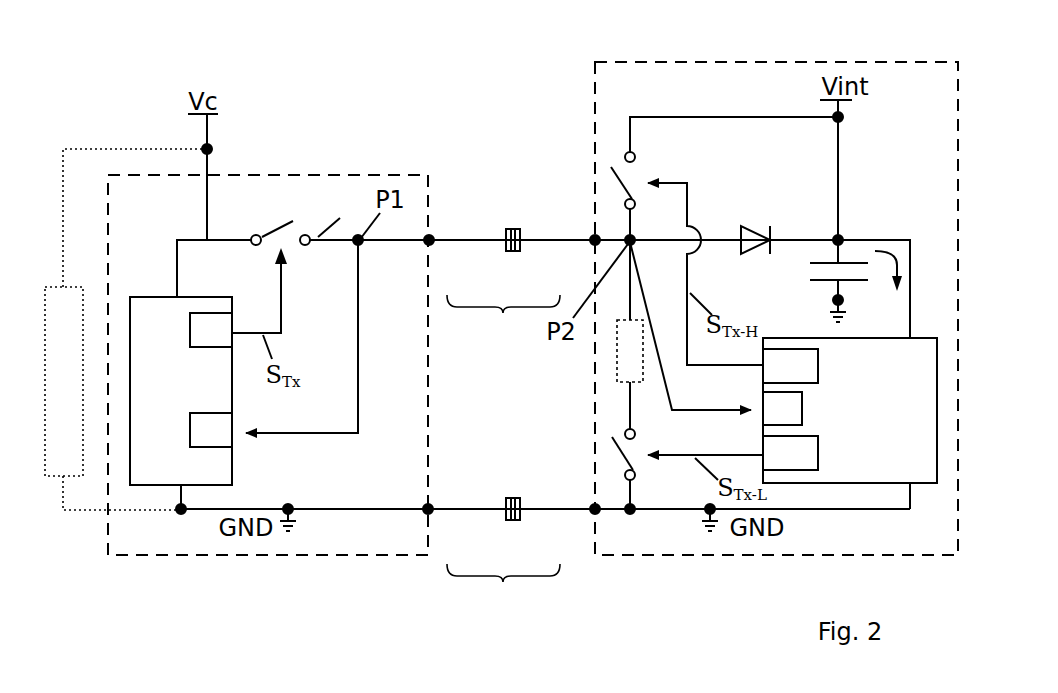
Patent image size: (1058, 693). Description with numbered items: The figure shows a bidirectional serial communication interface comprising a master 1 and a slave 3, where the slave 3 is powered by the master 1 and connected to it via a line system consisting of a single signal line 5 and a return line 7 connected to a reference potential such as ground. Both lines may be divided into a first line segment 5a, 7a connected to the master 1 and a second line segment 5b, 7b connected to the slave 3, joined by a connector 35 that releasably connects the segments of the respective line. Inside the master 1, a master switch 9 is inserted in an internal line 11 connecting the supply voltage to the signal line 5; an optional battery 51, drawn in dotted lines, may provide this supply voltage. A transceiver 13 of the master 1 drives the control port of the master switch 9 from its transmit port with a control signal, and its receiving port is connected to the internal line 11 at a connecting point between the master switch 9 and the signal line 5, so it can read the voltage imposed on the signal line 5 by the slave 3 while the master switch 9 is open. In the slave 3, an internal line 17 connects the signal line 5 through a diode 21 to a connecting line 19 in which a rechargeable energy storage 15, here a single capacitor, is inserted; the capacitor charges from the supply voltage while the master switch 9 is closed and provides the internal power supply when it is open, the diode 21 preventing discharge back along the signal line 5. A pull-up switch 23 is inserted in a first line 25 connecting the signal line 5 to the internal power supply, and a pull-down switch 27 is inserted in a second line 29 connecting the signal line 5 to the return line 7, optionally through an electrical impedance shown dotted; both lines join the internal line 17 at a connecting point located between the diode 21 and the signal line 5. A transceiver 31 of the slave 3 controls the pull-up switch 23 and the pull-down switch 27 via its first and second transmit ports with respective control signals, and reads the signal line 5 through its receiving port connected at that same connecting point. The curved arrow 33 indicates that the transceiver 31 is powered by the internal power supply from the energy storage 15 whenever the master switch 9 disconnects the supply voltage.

The master 1 is at (333, 556).
The slave 3 is at (688, 556).
The signal line 5 is at (503, 318).
The first line segment 5a is at (479, 245).
The second line segment 5b is at (557, 245).
The return line 7 is at (503, 587).
The first line segment 7a is at (480, 512).
The second line segment 7b is at (556, 512).
The master switch 9 is at (275, 229).
The internal line 11 is at (329, 218).
The transceiver 13 is at (181, 391).
The rechargeable energy storage 15 is at (850, 283).
The internal line 17 is at (800, 237).
The connecting line 19 is at (847, 253).
The diode 21 is at (737, 237).
The pull-up switch 23 is at (617, 184).
The first line 25 is at (735, 116).
The pull-down switch 27 is at (612, 455).
The second line 29 is at (627, 398).
The transceiver 31 is at (849, 410).
The curved arrow 33 is at (903, 251).
The connector 35 is at (509, 226).
The battery 51 is at (126, 329).